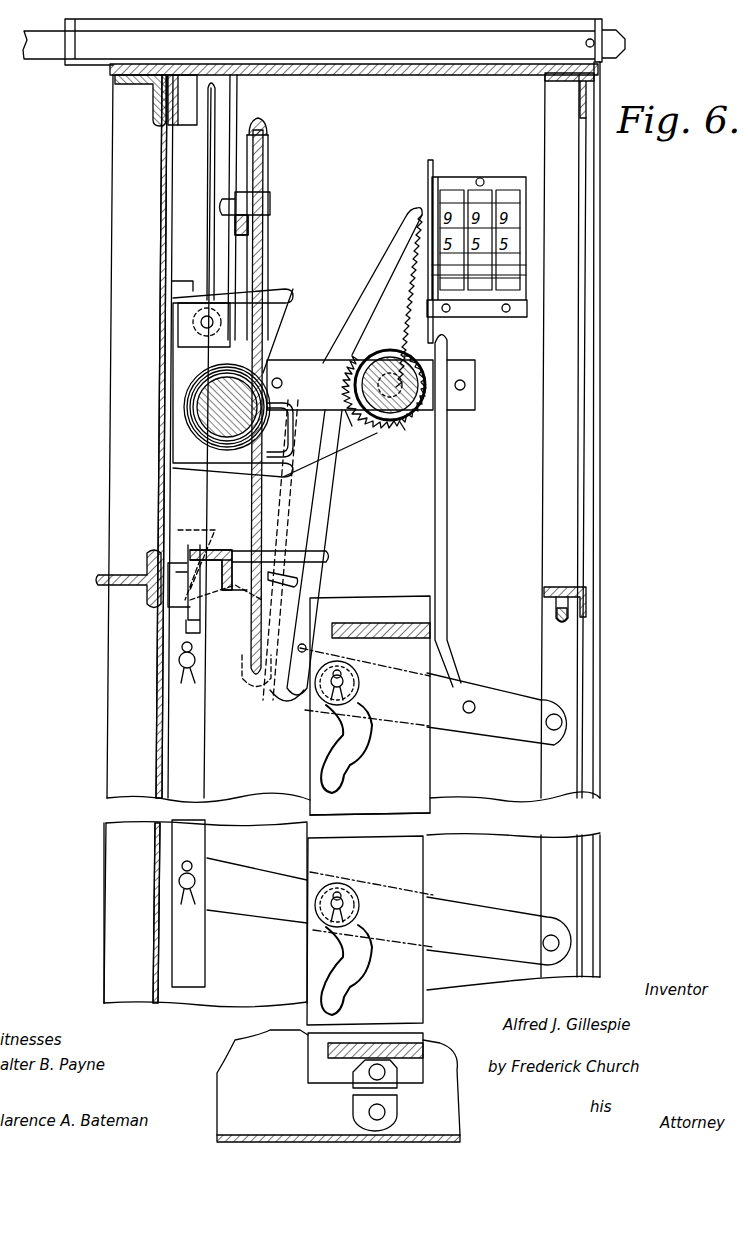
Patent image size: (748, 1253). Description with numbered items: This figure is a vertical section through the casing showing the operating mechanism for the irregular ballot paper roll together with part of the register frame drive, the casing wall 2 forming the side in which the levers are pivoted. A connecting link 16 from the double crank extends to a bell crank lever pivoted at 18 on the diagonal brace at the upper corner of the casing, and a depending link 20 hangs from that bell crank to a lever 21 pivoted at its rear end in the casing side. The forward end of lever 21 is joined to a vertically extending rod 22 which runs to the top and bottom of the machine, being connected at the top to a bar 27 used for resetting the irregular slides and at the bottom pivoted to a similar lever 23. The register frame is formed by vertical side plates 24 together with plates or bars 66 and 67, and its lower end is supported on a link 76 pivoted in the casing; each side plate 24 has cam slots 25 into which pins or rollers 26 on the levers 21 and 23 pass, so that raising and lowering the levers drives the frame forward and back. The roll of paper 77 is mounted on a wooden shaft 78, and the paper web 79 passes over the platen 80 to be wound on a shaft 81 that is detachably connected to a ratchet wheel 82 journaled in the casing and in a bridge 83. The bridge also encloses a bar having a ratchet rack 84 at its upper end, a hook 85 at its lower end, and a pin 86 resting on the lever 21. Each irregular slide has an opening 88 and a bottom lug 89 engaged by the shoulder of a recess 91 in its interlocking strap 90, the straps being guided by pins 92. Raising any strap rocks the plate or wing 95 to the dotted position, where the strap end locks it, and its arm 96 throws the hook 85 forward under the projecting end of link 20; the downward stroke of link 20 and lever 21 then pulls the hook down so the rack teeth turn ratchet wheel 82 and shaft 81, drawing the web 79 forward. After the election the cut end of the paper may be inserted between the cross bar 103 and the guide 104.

The frame wall 2 is at (158, 503).
The connecting rod or link 16 is at (268, 128).
The pivot of bell crank lever 18 is at (270, 200).
The depending link 20 is at (266, 244).
The lever 21 is at (246, 692).
The vertically-extending rod or bar 22 is at (148, 766).
The lever 23 is at (274, 912).
The vertical side or plate 24 is at (365, 930).
The cam slot or guide 25 is at (362, 755).
The pin or roller 26 is at (358, 684).
The bar 27 is at (163, 128).
The plate or bar of register frame 66 is at (428, 1044).
The plate or bar of register frame 67 is at (382, 628).
The link 76 is at (352, 1106).
The roll of paper 77 is at (282, 372).
The wooden shaft 78 is at (182, 433).
The paper web 79 is at (298, 355).
The platen 80 is at (292, 292).
The shaft 81 is at (392, 355).
The ratchet wheel 82 is at (405, 430).
The bridge 83 is at (352, 426).
The ratchet rack 84 is at (402, 228).
The hook 85 is at (286, 702).
The pin 86 is at (310, 651).
The opening 88 is at (440, 412).
The upturned part or lug 89 is at (185, 606).
The interlocking rod or strap 90 is at (190, 622).
The recess 91 is at (291, 430).
The pin 92 is at (176, 572).
The pivoted or rocking plate or wing 95 is at (212, 550).
The arm 96 is at (328, 556).
The cross bar 103 is at (548, 590).
The guide 104 is at (560, 614).